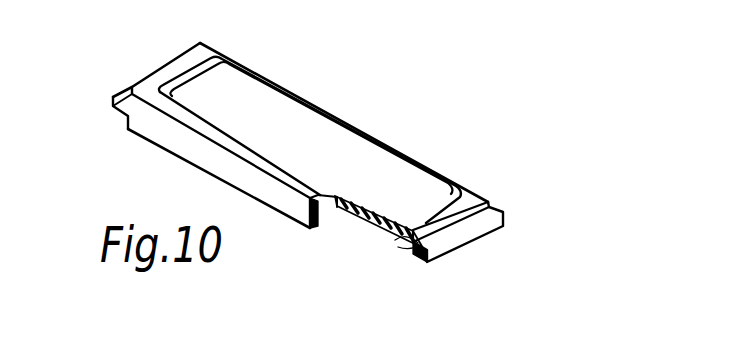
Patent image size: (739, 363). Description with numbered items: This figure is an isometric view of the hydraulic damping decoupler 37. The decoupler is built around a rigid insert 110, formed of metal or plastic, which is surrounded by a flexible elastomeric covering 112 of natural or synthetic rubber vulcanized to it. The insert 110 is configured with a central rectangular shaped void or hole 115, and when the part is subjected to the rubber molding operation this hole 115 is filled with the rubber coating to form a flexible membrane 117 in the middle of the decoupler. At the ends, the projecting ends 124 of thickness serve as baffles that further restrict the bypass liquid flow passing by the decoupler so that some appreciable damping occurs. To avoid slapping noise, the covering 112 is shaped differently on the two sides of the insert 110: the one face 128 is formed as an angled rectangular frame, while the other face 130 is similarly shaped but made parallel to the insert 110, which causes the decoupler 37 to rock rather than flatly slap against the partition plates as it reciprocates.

The hydraulic damping decoupler 37 is at (304, 171).
The flexible elastomeric covering 112 is at (362, 123).
The flexible membrane 117 is at (240, 97).
The one face 128 is at (310, 125).
The projecting ends 124 is at (127, 92).
The other face 130 is at (198, 168).
The central rectangular shaped void or hole 115 is at (397, 238).
The rigid insert 110 is at (415, 246).